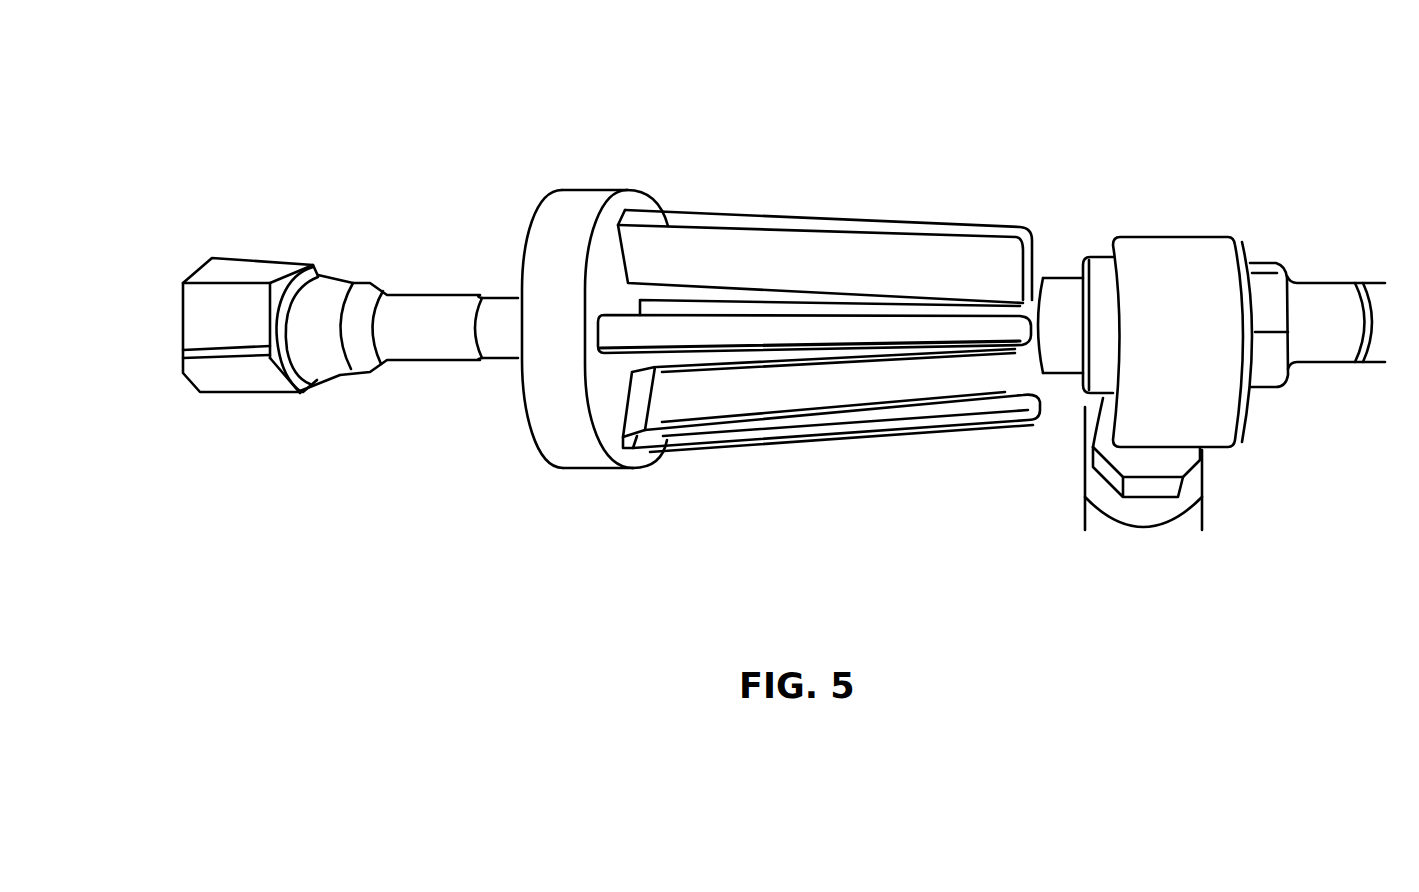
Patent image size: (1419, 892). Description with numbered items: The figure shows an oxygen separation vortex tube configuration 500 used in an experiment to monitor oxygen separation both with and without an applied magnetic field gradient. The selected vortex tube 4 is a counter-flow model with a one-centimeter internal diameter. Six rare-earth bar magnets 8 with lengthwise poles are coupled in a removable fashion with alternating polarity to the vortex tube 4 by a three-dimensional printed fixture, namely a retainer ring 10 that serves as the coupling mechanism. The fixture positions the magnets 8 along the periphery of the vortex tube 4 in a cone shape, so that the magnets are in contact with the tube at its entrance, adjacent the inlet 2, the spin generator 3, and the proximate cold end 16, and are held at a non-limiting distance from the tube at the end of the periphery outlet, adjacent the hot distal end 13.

The oxygen separation vortex tube configuration 500 is at (472, 117).
The hot distal end 13 is at (247, 386).
The retainer ring 10 is at (578, 200).
The rare-earth bar magnets 8 is at (745, 268).
The vortex tube 4 is at (1033, 300).
The spin generator 3 is at (1167, 342).
The proximate (cold) end 16 is at (1325, 298).
The inlet 2 is at (1107, 503).